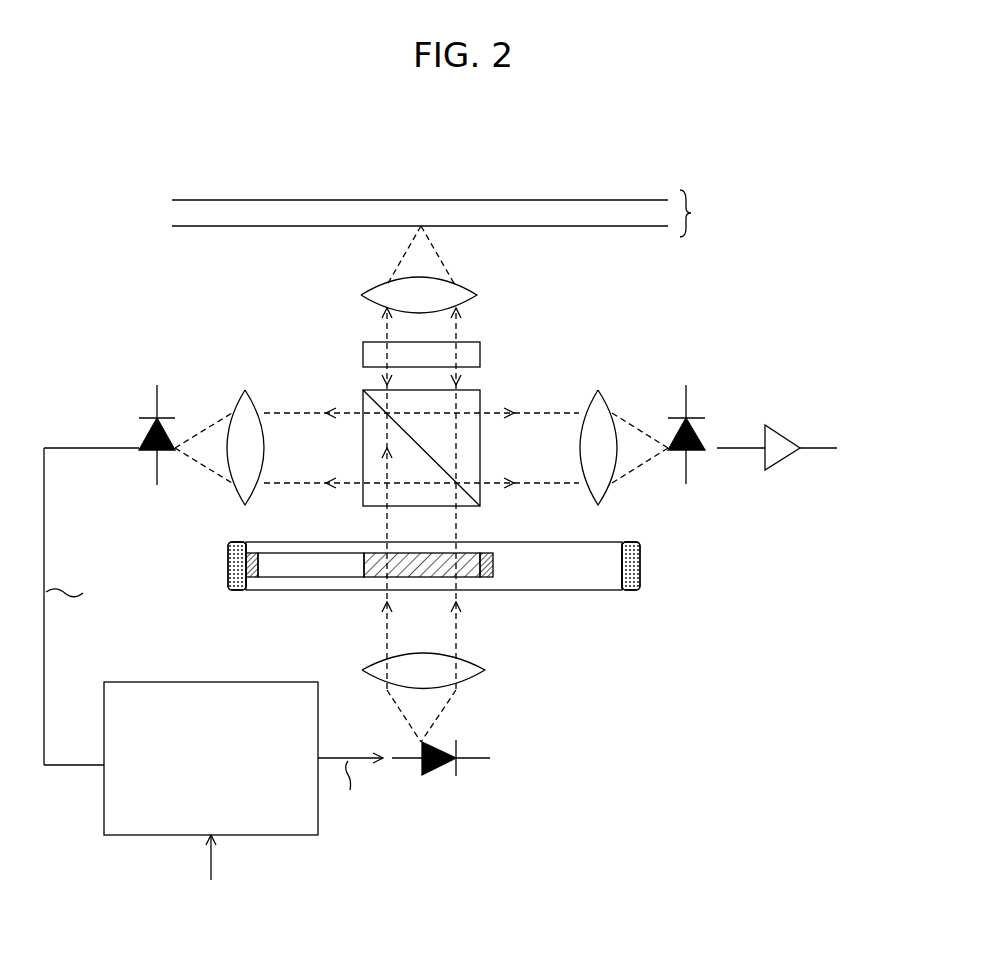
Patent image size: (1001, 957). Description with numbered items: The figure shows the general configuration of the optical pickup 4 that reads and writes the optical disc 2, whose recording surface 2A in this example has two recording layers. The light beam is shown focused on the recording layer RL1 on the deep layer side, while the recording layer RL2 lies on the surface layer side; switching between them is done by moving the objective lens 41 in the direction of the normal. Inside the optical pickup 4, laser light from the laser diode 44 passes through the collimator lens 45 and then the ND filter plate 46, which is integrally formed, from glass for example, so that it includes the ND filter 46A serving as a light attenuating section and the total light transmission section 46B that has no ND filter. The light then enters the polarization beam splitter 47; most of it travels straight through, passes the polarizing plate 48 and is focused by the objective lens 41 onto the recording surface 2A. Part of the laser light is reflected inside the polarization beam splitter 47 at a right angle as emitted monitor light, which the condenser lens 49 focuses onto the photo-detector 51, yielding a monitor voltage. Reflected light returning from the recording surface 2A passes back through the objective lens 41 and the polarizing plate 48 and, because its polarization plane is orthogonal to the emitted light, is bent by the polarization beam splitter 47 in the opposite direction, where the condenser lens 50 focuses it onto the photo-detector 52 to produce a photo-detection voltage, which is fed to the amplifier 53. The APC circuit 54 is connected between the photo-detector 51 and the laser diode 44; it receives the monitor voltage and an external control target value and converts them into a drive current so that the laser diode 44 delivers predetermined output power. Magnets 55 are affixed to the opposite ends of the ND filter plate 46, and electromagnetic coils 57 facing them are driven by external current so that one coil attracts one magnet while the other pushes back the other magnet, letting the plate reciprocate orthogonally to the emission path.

The optical disc 2 is at (664, 162).
The recording surface 2A is at (701, 213).
The recording layer RL1 is at (538, 200).
The recording layer RL2 is at (606, 226).
The optical pickup 4 is at (636, 812).
The objective lens 41 is at (477, 293).
The laser diode 44 is at (434, 775).
The collimator lens 45 is at (487, 668).
The ND filter plate 46 is at (436, 586).
The ND filter 46A is at (405, 572).
The total light transmission section 46B is at (292, 580).
The polarization beam splitter 47 is at (472, 400).
The polarizing plate 48 is at (475, 355).
The condenser lens 49 is at (245, 390).
The condenser lens 50 is at (598, 390).
The photo-detector 51 is at (143, 440).
The photo-detector 52 is at (696, 418).
The amplifier 53 is at (785, 436).
The APC circuit 54 is at (207, 682).
The magnets 55 is at (255, 560).
The electromagnetic coils 57 is at (228, 563).